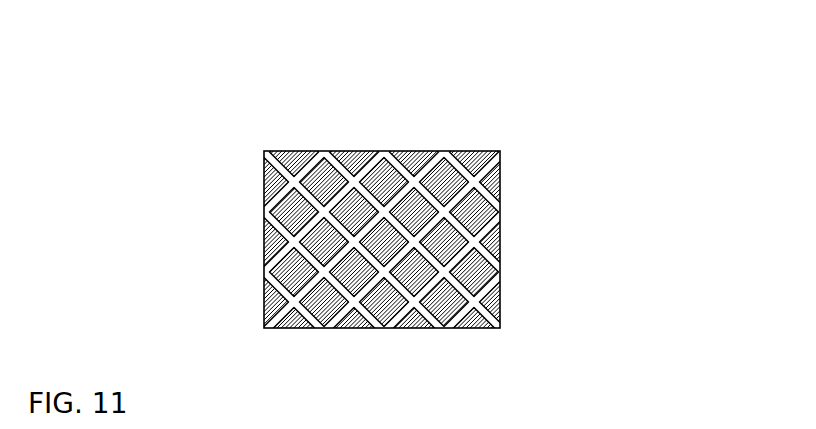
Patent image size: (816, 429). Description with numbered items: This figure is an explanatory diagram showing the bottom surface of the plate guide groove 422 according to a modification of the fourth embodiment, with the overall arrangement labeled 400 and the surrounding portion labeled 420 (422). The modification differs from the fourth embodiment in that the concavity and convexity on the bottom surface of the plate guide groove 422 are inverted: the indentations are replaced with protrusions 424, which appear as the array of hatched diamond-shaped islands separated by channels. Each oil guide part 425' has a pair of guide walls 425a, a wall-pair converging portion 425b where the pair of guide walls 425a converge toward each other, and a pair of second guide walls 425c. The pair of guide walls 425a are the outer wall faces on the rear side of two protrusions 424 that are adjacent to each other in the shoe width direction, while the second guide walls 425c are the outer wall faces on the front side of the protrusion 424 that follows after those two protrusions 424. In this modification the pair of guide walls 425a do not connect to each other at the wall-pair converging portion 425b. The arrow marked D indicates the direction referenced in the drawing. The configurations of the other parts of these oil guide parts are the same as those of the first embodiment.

The display panel 400 is at (650, 132).
The substrate 420 is at (163, 83).
The plate guide groove 422 is at (376, 226).
The protrusion 424 is at (485, 206).
The oil guide part 425' is at (528, 98).
The guide wall 425a is at (433, 222).
The wall-pair converging portion 425b is at (391, 222).
The second guide wall 425c is at (440, 200).
The direction D is at (560, 360).